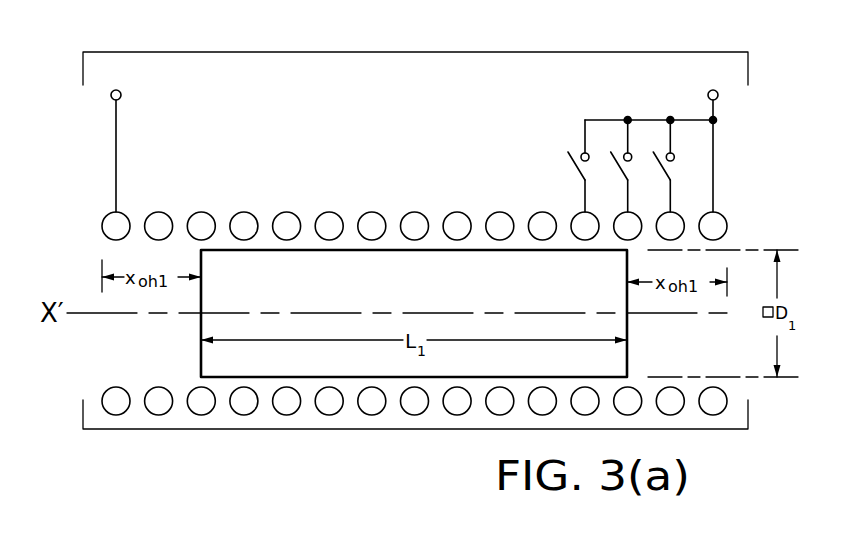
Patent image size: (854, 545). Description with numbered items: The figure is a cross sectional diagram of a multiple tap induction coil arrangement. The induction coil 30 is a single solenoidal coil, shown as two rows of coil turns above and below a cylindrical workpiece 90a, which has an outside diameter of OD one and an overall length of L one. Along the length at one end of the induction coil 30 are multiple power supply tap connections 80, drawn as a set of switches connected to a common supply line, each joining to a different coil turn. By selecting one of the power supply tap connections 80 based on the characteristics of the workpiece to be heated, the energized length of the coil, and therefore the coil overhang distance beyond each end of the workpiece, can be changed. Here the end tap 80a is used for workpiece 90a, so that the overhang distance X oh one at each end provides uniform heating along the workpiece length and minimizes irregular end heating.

The induction coil 30 is at (415, 52).
The power supply tap connections 80 is at (543, 155).
The end tap 80a is at (722, 161).
The workpiece 90a is at (402, 288).